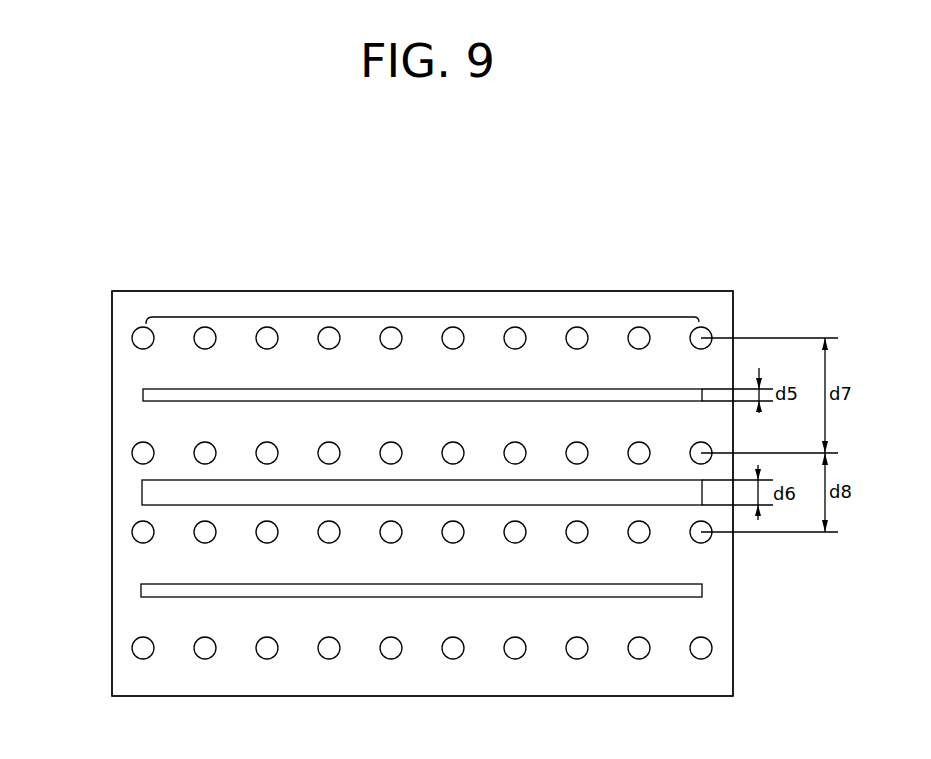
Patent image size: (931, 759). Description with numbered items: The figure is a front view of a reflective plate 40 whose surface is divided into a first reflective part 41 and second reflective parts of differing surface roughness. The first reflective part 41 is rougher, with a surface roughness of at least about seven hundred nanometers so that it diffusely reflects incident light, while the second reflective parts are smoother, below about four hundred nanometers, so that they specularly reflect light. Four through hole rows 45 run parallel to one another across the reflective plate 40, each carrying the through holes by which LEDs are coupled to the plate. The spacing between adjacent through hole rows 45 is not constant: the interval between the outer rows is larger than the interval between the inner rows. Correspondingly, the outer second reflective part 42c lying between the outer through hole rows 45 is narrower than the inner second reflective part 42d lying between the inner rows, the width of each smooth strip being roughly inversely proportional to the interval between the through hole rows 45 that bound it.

The reflective plate 40 is at (690, 241).
The first reflective part 41 is at (127, 315).
The outer second reflective part 42c is at (142, 398).
The inner second reflective part 42d is at (142, 494).
The through hole row 45 is at (422, 316).